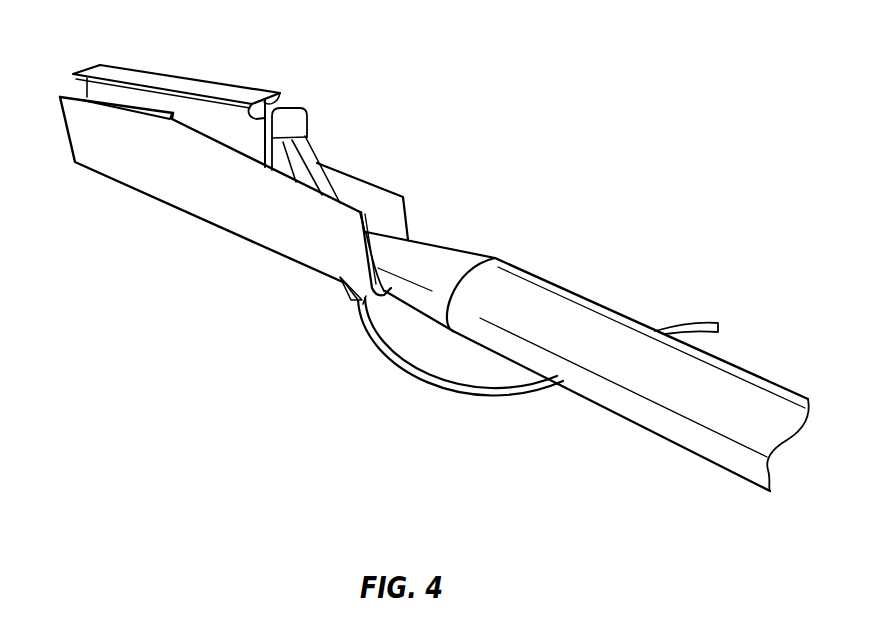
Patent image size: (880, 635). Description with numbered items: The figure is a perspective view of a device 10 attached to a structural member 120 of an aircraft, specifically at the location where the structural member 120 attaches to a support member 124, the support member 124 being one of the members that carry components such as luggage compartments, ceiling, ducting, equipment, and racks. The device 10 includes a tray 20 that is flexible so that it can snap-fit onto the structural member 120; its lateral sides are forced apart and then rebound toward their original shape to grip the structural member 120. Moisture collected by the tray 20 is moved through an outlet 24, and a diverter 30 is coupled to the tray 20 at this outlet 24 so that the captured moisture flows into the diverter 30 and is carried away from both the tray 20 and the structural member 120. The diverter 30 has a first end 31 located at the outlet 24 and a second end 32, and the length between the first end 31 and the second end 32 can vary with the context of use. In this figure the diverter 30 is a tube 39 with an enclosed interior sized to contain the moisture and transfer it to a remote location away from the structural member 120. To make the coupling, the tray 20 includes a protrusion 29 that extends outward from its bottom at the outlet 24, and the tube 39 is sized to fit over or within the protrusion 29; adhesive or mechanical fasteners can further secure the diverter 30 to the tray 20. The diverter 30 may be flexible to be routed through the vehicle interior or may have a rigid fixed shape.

The device 10 is at (112, 227).
The tray 20 is at (108, 136).
The outlet 24 is at (380, 264).
The protrusion 29 is at (343, 294).
The diverter 30 is at (437, 388).
The first end 31 is at (358, 304).
The second end 32 is at (718, 323).
The tube 39 is at (503, 400).
The structural member 120 is at (173, 81).
The support member 124 is at (753, 392).